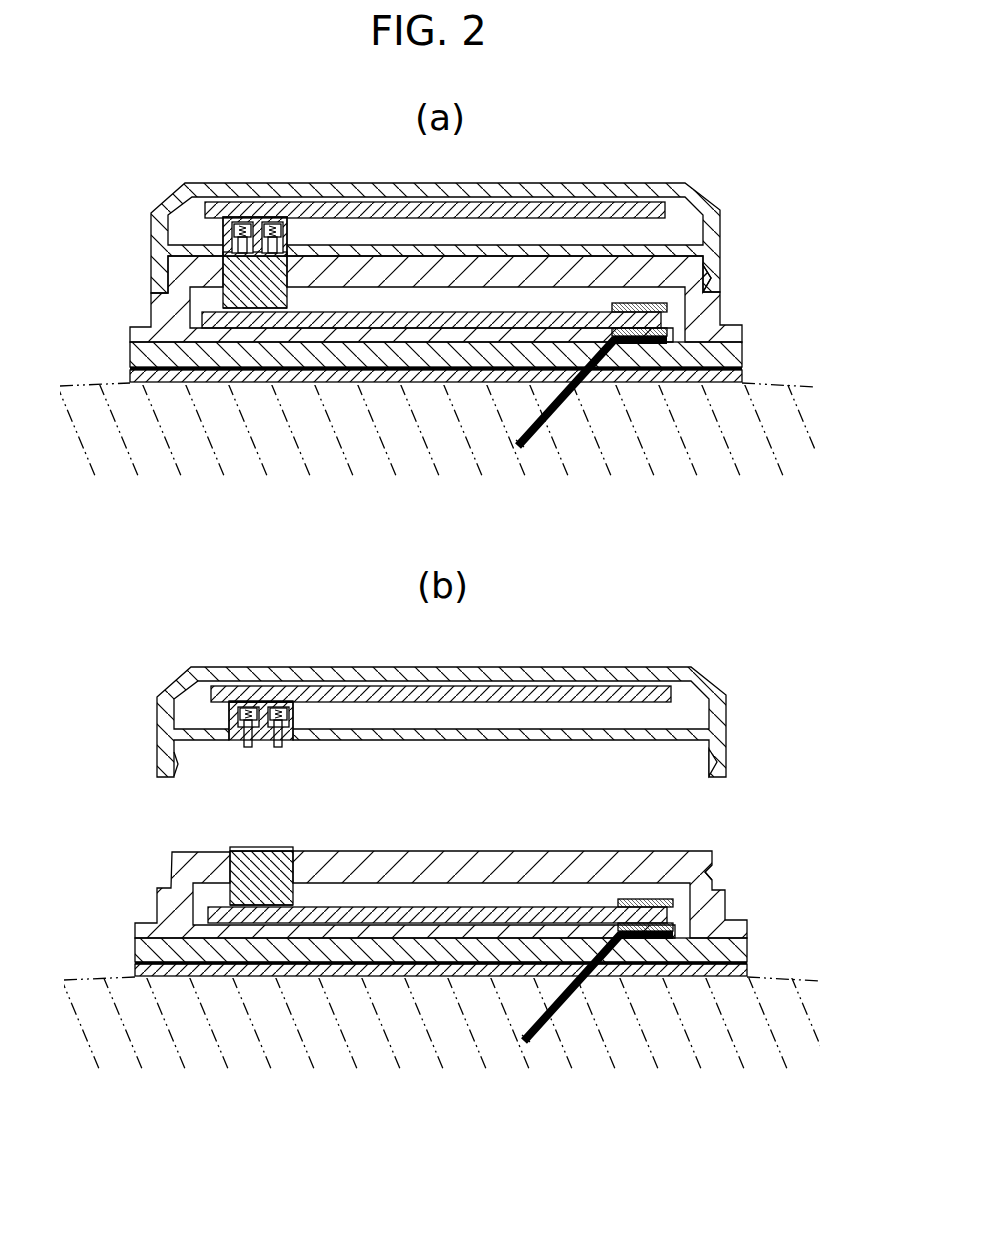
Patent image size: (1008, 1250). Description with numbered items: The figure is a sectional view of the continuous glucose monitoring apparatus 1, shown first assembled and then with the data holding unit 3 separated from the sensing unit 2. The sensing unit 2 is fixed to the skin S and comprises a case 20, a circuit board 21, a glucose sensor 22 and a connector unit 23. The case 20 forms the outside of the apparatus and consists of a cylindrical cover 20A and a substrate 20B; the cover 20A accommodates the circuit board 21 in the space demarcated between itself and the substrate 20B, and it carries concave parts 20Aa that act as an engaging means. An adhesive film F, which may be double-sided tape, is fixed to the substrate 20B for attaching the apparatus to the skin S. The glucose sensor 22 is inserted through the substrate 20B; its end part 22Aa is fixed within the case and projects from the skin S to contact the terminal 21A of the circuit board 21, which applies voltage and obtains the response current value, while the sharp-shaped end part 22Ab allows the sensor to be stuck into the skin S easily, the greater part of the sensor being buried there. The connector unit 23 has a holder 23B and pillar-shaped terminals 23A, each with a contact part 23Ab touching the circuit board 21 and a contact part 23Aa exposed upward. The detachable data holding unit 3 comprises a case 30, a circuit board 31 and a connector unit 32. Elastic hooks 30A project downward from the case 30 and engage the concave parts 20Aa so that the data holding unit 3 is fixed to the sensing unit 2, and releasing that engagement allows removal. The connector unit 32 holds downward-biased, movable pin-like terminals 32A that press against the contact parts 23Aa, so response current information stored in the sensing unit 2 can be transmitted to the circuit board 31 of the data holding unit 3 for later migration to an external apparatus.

The continuous glucose monitoring apparatus 1 is at (722, 184).
The sensing unit 2 is at (150, 311).
The data holding unit 3 is at (446, 471).
The case 20 is at (498, 609).
The cover 20A is at (476, 597).
The concave part 20Aa is at (712, 280).
The substrate 20B is at (735, 355).
The circuit board 21 is at (455, 573).
The terminal 21A is at (645, 303).
The glucose sensor 22 is at (619, 718).
The end part 22Aa is at (641, 340).
The end part 22Ab is at (553, 1078).
The connector unit 23 is at (237, 632).
The pillar-shaped terminal 23A is at (262, 286).
The contact part 23Aa is at (278, 849).
The contact part 23Ab is at (245, 308).
The holder 23B is at (290, 268).
The case 30 is at (474, 484).
The hook 30A is at (713, 268).
The circuit board 31 is at (508, 206).
The connector unit 32 is at (259, 475).
The pin-like terminal 32A is at (250, 250).
The adhesive film F is at (742, 376).
The skin S is at (96, 381).